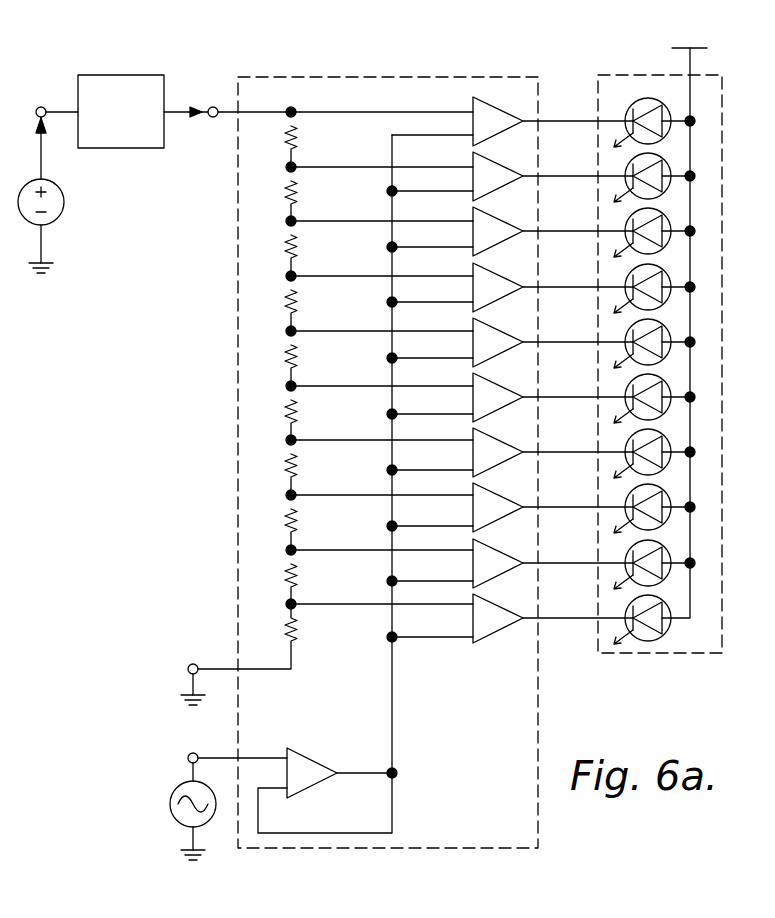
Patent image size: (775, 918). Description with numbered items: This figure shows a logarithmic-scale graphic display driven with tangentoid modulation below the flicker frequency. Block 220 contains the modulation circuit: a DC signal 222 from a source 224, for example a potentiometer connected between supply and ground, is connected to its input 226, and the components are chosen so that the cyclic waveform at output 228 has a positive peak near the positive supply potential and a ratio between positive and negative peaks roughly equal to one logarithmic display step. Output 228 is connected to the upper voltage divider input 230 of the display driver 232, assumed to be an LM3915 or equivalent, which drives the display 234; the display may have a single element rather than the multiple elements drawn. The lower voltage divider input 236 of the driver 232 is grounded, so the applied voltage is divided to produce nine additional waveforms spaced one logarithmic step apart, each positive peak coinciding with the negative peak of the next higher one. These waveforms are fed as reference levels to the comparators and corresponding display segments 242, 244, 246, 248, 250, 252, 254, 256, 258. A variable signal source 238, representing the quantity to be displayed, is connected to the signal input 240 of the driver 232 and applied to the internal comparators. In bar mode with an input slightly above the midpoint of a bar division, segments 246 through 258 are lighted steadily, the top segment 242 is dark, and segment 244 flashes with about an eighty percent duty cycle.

The block 220 is at (117, 75).
The DC signal 222 is at (41, 138).
The source 224 is at (64, 208).
The input 226 is at (44, 107).
The output 228 is at (182, 115).
The upper voltage divider input 230 is at (213, 106).
The display driver 232 is at (338, 77).
The display 234 is at (628, 75).
The lower voltage divider input 236 is at (188, 667).
The variable signal source 238 is at (170, 798).
The signal input 240 is at (188, 757).
The comparator and display segment 242 is at (345, 154).
The comparator and display segment 244 is at (345, 209).
The comparator and display segment 246 is at (345, 263).
The comparator and display segment 248 is at (345, 318).
The comparator and display segment 250 is at (345, 373).
The comparator and display segment 252 is at (345, 428).
The comparator and display segment 254 is at (345, 482).
The comparator and display segment 256 is at (345, 537).
The comparator and display segment 258 is at (345, 592).